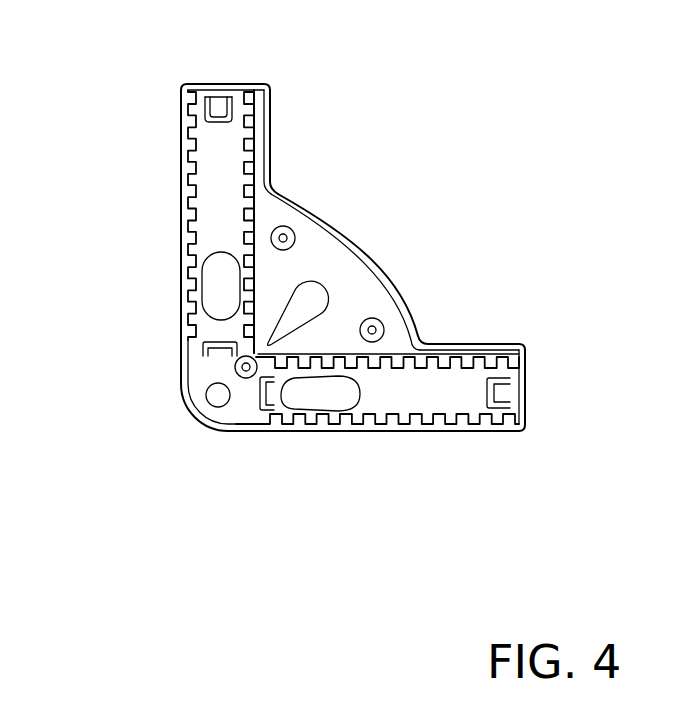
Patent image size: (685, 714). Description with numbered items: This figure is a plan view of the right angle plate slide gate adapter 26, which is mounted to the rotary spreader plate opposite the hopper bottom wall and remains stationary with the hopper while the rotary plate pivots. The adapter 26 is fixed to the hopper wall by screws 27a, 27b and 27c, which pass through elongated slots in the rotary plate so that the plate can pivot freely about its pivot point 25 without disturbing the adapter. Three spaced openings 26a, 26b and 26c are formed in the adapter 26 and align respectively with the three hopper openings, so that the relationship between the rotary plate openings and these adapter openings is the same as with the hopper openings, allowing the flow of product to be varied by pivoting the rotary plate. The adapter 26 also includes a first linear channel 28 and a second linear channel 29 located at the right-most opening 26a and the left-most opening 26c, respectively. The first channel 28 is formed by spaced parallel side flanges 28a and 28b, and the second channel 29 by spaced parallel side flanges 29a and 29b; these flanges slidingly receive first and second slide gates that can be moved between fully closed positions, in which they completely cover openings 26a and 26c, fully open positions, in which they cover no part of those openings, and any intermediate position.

The pivot point 25 is at (215, 398).
The slide gate adapter 26 is at (350, 277).
The opening 26a is at (218, 283).
The opening 26b is at (298, 303).
The opening 26c is at (325, 397).
The screw 27a is at (246, 378).
The screw 27b is at (284, 236).
The screw 27c is at (376, 328).
The first linear channel 28 is at (226, 157).
The side flange 28a is at (181, 150).
The side flange 28b is at (250, 160).
The second linear channel 29 is at (442, 400).
The side flange 29a is at (473, 428).
The side flange 29b is at (462, 348).